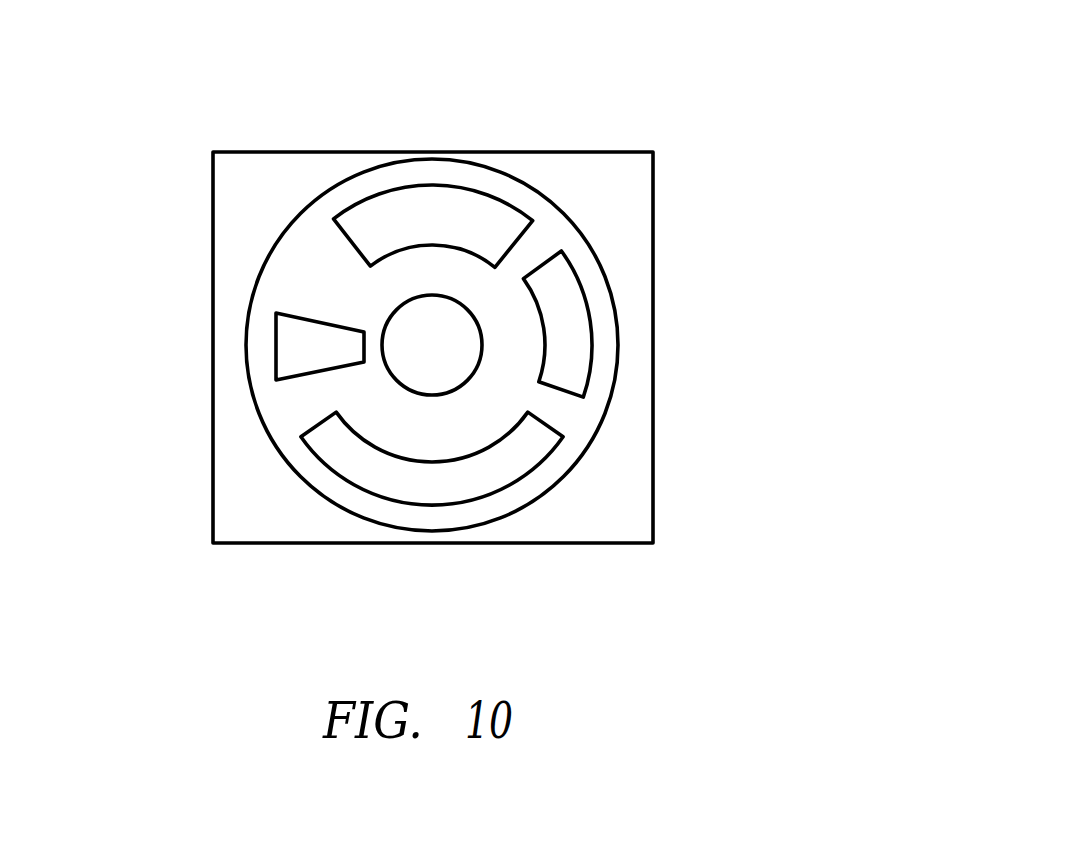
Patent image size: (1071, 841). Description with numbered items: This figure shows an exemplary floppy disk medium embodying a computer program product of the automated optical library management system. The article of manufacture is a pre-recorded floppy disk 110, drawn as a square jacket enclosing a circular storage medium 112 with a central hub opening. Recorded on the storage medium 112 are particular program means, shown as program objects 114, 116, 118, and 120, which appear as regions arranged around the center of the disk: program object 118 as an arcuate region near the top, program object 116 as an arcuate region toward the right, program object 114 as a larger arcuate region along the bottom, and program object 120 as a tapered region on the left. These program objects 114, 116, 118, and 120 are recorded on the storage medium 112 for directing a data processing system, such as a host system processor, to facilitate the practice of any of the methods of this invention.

The pre-recorded floppy disk 110 is at (515, 90).
The storage medium 112 is at (307, 245).
The program object 114 is at (518, 413).
The program object 116 is at (572, 355).
The program object 118 is at (502, 234).
The program object 120 is at (293, 345).